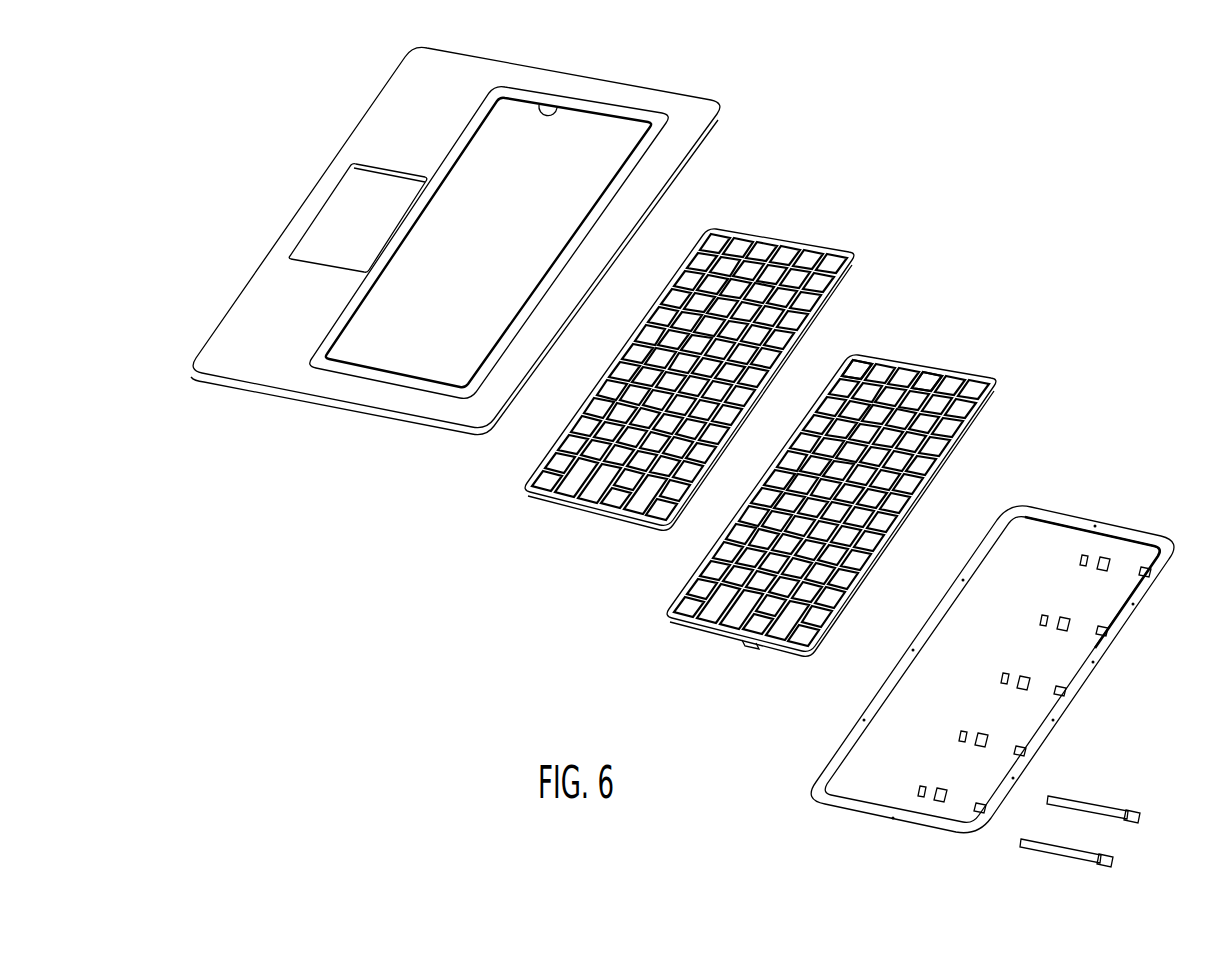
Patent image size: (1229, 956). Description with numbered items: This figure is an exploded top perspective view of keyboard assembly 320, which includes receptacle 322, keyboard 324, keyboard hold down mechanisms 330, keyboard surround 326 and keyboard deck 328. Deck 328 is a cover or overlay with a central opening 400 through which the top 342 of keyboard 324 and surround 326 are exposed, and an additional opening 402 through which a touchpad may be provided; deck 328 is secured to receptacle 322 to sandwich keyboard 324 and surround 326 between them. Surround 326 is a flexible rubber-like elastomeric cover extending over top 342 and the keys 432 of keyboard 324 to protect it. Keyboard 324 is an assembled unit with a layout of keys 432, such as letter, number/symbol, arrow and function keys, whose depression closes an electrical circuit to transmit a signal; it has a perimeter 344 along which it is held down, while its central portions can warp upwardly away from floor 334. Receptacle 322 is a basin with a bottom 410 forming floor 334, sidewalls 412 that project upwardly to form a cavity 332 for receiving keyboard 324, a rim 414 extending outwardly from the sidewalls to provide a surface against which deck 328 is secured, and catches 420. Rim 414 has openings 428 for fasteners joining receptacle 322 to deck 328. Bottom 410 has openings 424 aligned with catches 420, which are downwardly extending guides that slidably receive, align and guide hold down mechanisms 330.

The keyboard assembly 320 is at (851, 118).
The receptacle 322 is at (1127, 516).
The keyboard 324 is at (918, 357).
The keyboard surround 326 is at (798, 236).
The keyboard deck 328 is at (667, 100).
The keyboard hold down mechanisms 330 is at (1056, 840).
The cavity 332 is at (832, 792).
The floor 334 is at (880, 780).
The top 342 is at (888, 357).
The perimeter 344 is at (750, 648).
The central opening 400 is at (556, 100).
The additional opening 402 is at (386, 186).
The bottom 410 is at (1075, 545).
The sidewalls 412 is at (1030, 516).
The rim 414 is at (885, 816).
The catches 420 is at (943, 802).
The openings 424 is at (1005, 676).
The openings 428 is at (1167, 568).
The keys 432 is at (940, 366).